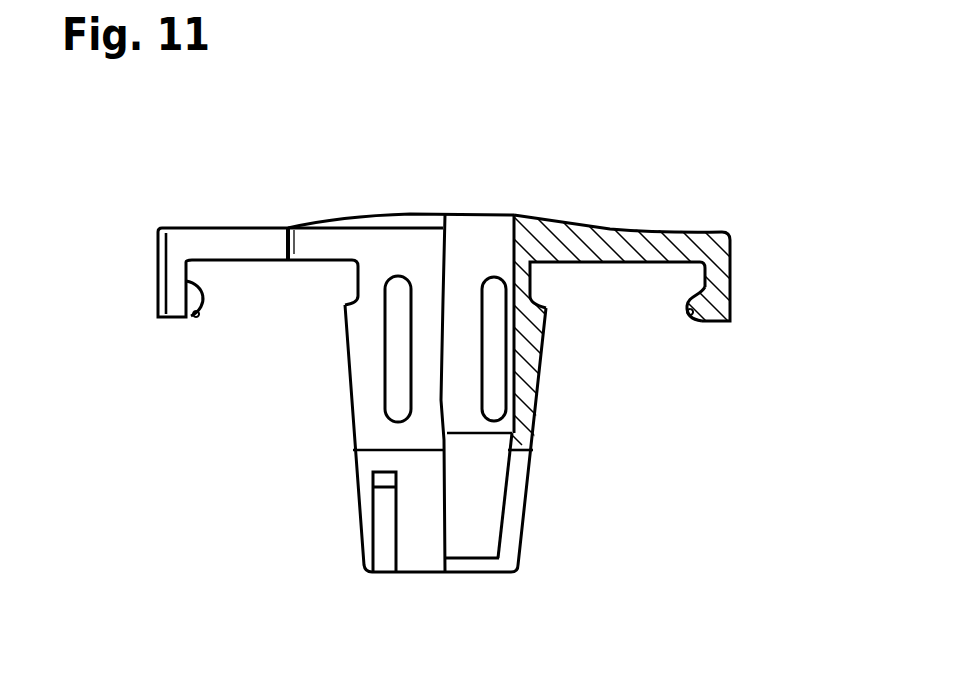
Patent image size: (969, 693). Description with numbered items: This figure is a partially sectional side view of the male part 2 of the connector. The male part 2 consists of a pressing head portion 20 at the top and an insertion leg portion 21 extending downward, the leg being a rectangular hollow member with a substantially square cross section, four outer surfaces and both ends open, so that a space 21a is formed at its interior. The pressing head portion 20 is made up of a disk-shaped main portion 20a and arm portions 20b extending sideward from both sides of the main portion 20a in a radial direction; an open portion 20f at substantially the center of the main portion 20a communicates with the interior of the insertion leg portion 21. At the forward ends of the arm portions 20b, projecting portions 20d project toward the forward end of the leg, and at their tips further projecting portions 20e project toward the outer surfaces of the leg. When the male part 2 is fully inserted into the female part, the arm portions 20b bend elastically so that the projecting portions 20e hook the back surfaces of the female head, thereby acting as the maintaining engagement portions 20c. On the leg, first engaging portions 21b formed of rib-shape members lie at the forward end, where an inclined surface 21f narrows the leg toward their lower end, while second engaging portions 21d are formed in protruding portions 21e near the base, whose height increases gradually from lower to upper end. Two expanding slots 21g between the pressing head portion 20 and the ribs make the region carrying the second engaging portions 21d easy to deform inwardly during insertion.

The male part 2 is at (524, 190).
The pressing head portion 20 is at (452, 213).
The main portion 20a is at (547, 215).
The arm portions 20b is at (222, 232).
The maintaining engagement portions 20c is at (194, 316).
The projecting portions 20d is at (172, 272).
The projecting portions 20e is at (443, 313).
The open portion 20f is at (482, 213).
The insertion leg portion 21 is at (525, 520).
The space 21a is at (460, 395).
The first engaging portions 21b is at (383, 510).
The second engaging portions 21d is at (347, 307).
The protruding portions 21e is at (354, 435).
The inclined surface 21f is at (423, 508).
The expanding slots 21g is at (392, 370).